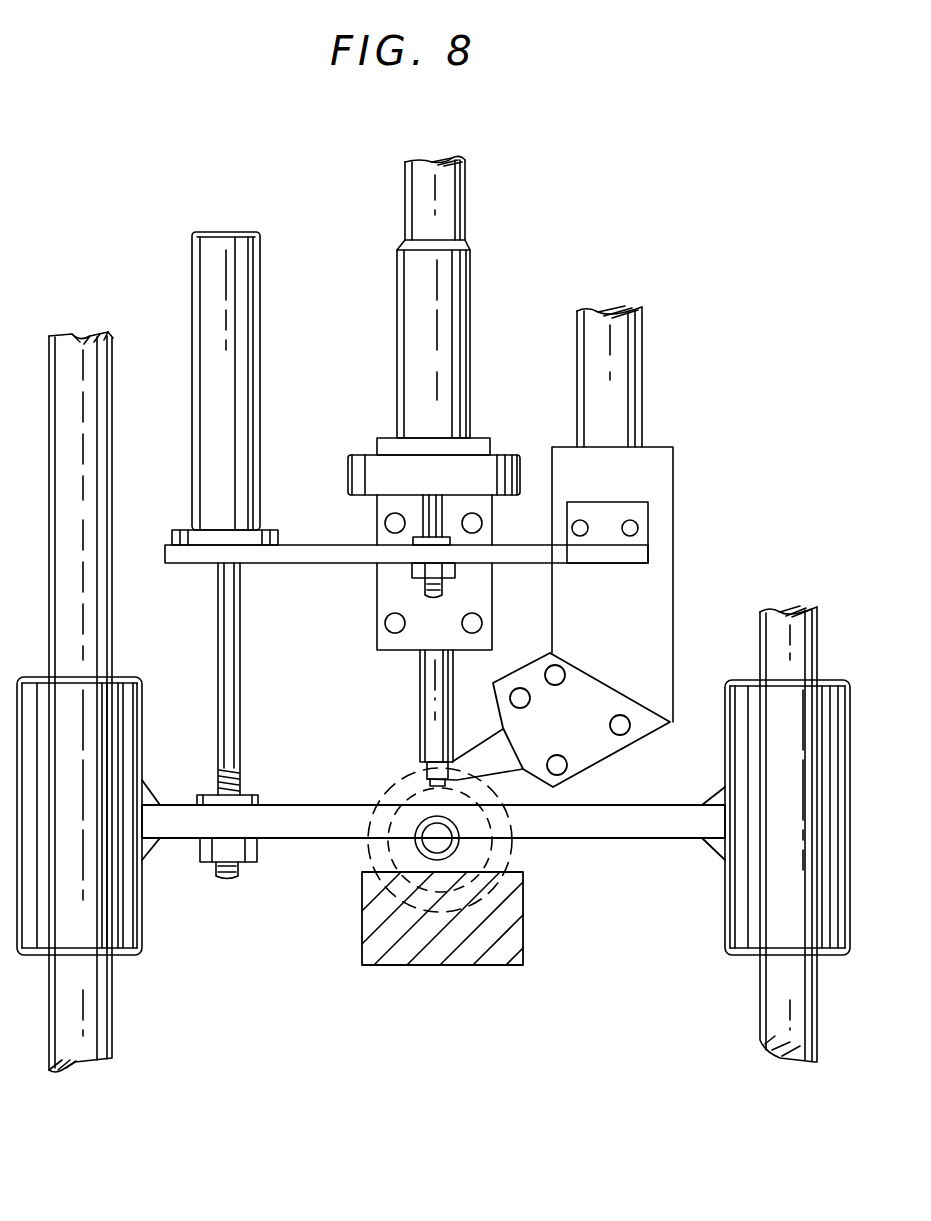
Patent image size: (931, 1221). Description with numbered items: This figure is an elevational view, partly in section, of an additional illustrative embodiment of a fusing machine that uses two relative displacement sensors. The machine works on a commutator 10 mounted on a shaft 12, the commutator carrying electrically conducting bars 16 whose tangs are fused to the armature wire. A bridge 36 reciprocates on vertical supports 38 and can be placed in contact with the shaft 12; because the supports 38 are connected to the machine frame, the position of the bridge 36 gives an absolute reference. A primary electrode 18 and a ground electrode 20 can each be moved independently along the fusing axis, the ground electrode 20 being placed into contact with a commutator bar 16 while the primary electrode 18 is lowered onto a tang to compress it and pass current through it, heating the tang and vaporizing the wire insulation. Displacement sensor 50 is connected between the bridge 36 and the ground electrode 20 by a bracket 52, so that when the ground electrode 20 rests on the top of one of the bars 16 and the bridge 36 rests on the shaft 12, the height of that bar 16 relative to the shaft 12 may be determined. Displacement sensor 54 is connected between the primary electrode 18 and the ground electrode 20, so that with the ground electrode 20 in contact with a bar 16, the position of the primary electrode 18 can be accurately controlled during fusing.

The commutator 10 is at (377, 840).
The shaft 12 is at (463, 840).
The commutator bar 16 is at (395, 788).
The primary electrode 18 is at (418, 726).
The ground electrode 20 is at (487, 732).
The bridge 36 is at (613, 840).
The vertical support 38 is at (817, 628).
The displacement sensor 50 is at (258, 387).
The bracket 52 is at (278, 565).
The displacement sensor 54 is at (470, 325).